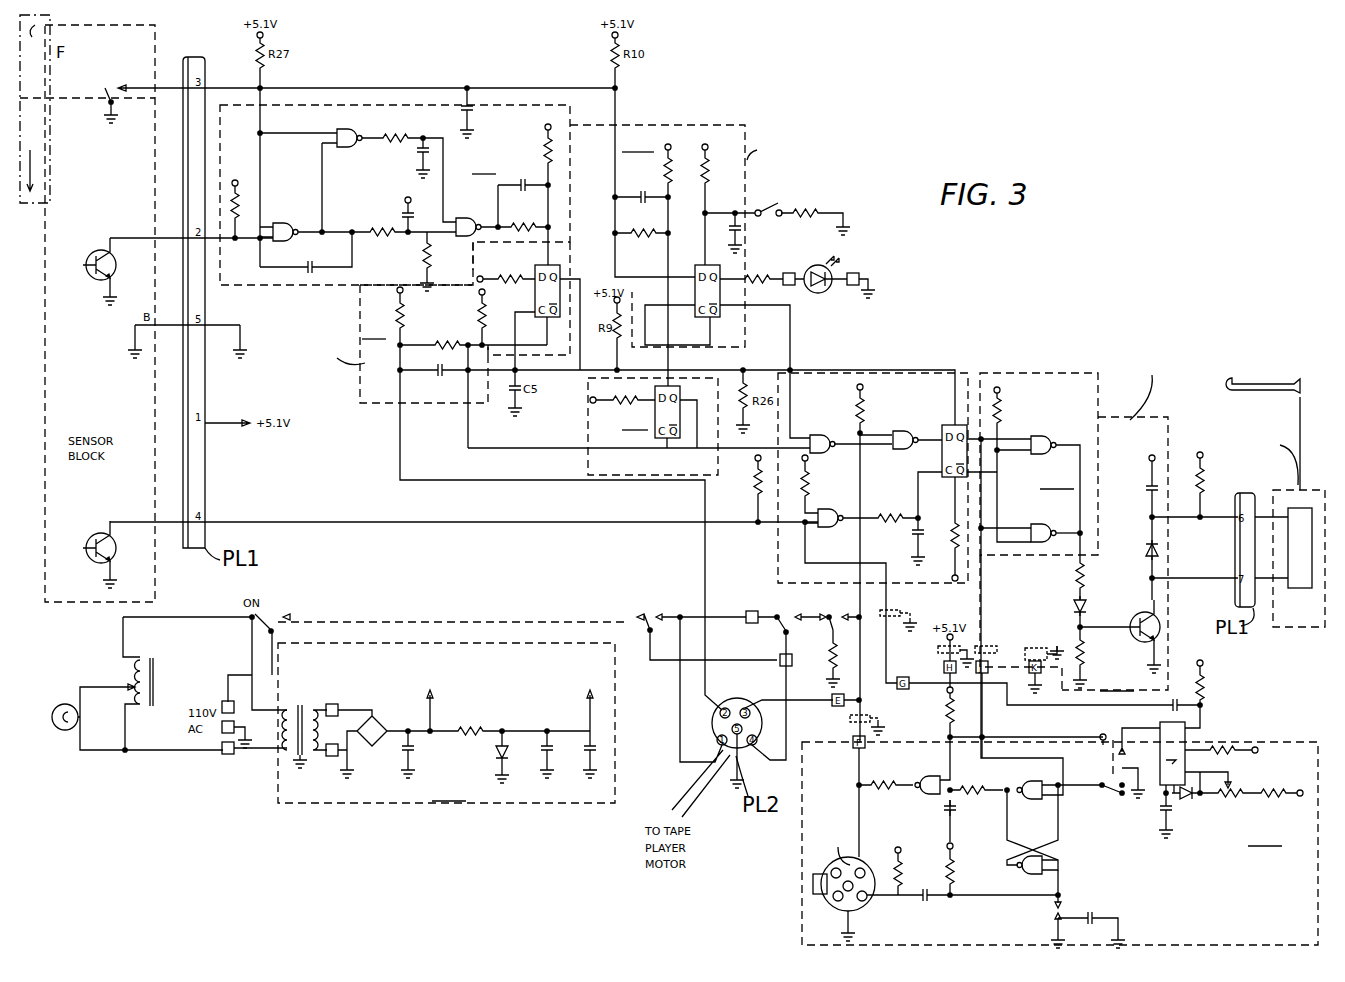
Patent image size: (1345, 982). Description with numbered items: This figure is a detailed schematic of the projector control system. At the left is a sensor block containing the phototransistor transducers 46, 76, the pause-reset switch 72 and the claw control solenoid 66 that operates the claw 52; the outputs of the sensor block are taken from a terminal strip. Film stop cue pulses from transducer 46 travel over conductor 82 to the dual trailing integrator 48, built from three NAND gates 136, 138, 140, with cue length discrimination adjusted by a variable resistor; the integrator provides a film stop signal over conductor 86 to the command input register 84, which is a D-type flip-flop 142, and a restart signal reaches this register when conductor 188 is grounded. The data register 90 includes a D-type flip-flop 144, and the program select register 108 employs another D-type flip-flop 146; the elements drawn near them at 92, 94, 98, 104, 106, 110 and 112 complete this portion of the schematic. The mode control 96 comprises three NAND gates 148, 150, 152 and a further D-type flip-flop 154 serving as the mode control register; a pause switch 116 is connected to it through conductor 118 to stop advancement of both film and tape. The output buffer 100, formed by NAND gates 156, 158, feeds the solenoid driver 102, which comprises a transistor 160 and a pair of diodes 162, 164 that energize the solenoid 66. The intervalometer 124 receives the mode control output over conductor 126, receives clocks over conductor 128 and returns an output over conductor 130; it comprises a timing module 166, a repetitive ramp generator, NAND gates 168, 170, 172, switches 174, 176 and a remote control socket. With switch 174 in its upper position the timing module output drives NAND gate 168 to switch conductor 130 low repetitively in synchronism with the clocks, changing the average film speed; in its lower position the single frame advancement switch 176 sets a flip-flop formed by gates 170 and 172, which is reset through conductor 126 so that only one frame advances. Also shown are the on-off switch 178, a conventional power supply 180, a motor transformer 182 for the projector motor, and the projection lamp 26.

The projection lamp 26 is at (70, 702).
The transducer 46 is at (100, 287).
The dual trailing integrator 48 is at (393, 189).
The claw 52 is at (1270, 400).
The claw control solenoid 66 is at (1318, 620).
The PRL switch 72 is at (104, 84).
The transducer 76 is at (83, 519).
The conductor 82 is at (124, 228).
The command input register 84 is at (612, 492).
The conductor 86 is at (547, 235).
The data register 90 is at (653, 330).
The data register input 92 is at (582, 416).
The PRL line 94 is at (362, 88).
The mode control 96 is at (804, 378).
The frame advance output 98 is at (736, 459).
The output buffer 100 is at (1036, 583).
The solenoid driver 102 is at (1123, 522).
The line C 104 is at (337, 518).
The mode control line 106 is at (798, 342).
The program select register 108 is at (722, 281).
The program select switch 110 is at (777, 204).
The light emitting diode 112 is at (838, 293).
The pause switch 116 is at (807, 632).
The conductor 118 is at (904, 557).
The intervalometer 124 is at (1060, 803).
The conductor 126 is at (983, 590).
The conductor 128 is at (1013, 704).
The conductor 130 is at (857, 768).
The NAND gate 136 is at (300, 193).
The NAND gate 138 is at (338, 132).
The NAND gate 140 is at (457, 214).
The D-type flip-flop 142 is at (562, 273).
The D-type flip-flop 144 is at (716, 350).
The D-type flip-flop 146 is at (730, 316).
The NAND gate 148 is at (844, 450).
The NAND gate 150 is at (845, 575).
The NAND gate 152 is at (920, 450).
The D-type flip-flop 154 is at (1000, 453).
The NAND gate 156 is at (1024, 437).
The NAND gate 158 is at (1062, 508).
The transistor 160 is at (1145, 658).
The diode 162 is at (1074, 608).
The diode 164 is at (1151, 544).
The timing module 166 is at (1187, 730).
The NAND gate 168 is at (918, 796).
The NAND gate 170 is at (1030, 770).
The NAND gate 172 is at (1041, 874).
The switch 174 is at (1114, 762).
The single frame advancement switch 176 is at (1063, 915).
The on-off switch 178 is at (464, 620).
The power supply 180 is at (448, 723).
The motor transformer 182 is at (158, 701).
The conductor 188 is at (540, 481).